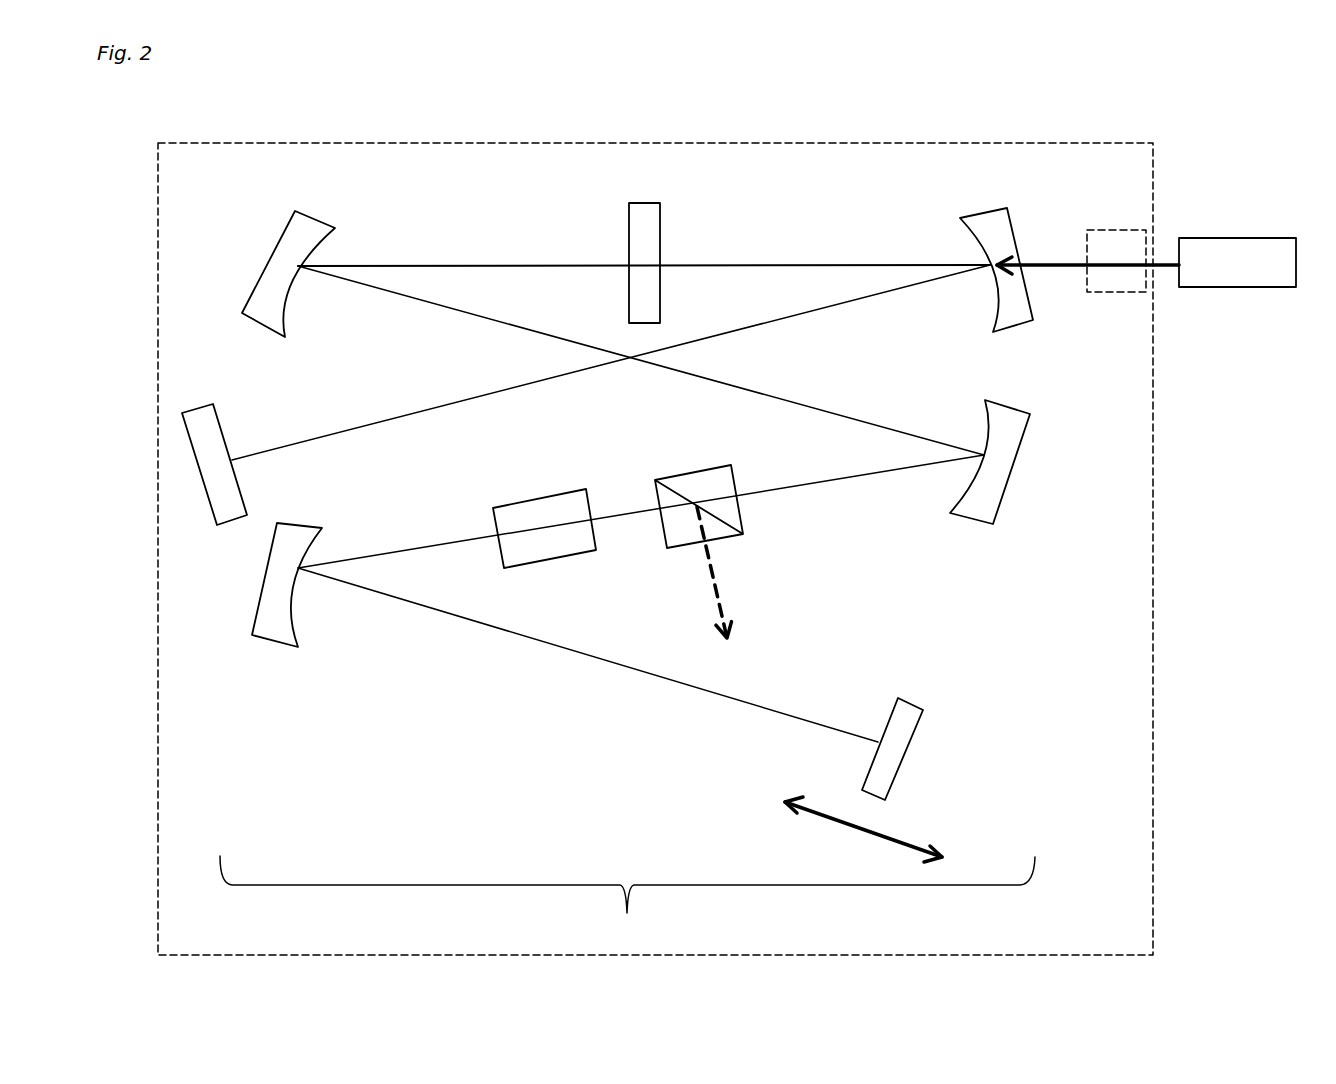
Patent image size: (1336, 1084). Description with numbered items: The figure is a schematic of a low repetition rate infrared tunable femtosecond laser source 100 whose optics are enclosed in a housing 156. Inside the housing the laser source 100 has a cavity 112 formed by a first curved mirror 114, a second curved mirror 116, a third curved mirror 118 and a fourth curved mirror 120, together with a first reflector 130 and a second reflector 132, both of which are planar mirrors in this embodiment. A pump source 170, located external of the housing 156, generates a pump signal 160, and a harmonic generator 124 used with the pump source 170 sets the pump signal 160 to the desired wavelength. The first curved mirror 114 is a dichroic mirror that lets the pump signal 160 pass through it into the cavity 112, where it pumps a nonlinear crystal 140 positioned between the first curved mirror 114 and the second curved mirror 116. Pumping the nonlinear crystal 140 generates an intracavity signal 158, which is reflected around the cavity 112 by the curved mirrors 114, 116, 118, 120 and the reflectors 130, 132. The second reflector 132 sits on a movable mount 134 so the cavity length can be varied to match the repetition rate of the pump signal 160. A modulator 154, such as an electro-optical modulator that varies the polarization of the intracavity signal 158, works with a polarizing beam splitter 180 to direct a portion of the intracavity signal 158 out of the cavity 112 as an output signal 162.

The laser source 100 is at (1197, 137).
The cavity 112 is at (627, 904).
The first curved mirror 114 is at (973, 240).
The second curved mirror 116 is at (287, 260).
The third curved mirror 118 is at (998, 508).
The fourth curved mirror 120 is at (263, 607).
The harmonic generator 124 is at (1113, 287).
The first reflector 130 is at (207, 420).
The second reflector 132 is at (908, 745).
The movable mount 134 is at (912, 843).
The nonlinear crystal 140 is at (656, 257).
The modulator 154 is at (527, 498).
The housing 156 is at (522, 142).
The intracavity signal 158 is at (847, 410).
The pump signal 160 is at (1043, 262).
The output signal 162 is at (727, 592).
The pump source 170 is at (1272, 283).
The polarizing beam splitter 180 is at (687, 473).